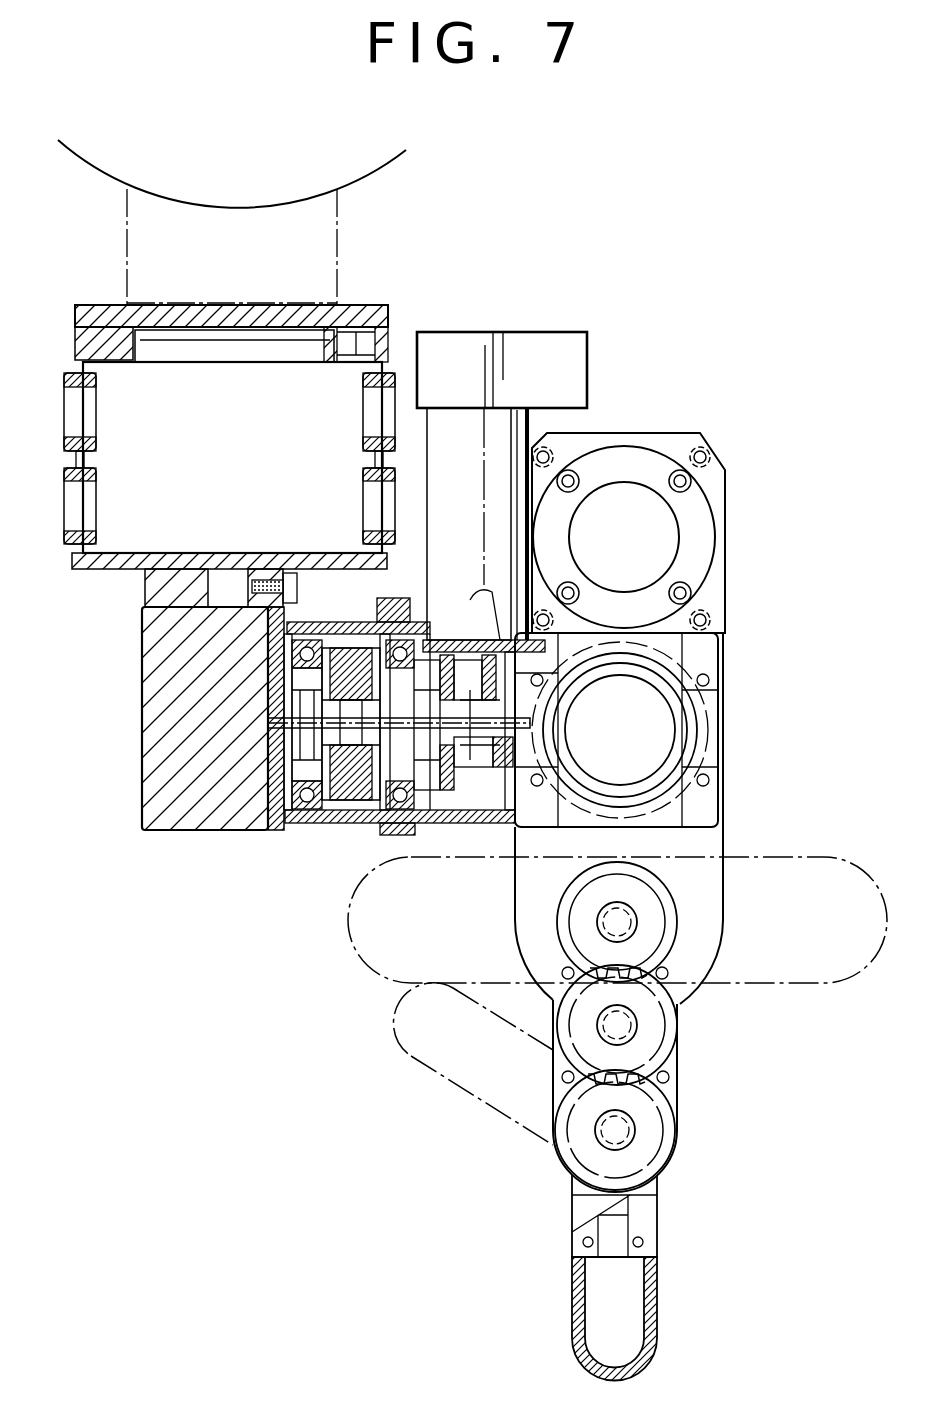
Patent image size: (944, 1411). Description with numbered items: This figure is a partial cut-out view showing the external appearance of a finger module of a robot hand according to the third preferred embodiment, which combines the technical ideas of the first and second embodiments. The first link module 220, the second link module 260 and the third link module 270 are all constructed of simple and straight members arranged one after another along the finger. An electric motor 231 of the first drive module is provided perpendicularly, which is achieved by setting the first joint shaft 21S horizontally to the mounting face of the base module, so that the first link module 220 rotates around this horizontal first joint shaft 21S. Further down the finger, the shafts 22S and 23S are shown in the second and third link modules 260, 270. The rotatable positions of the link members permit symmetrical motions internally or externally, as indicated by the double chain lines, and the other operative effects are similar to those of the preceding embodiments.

The electric motor 231 is at (518, 434).
The first link module 220 is at (705, 656).
The first joint shaft 21S is at (347, 812).
The gear shaft 22S is at (628, 918).
The gear shaft 23S is at (624, 1136).
The second link module 260 is at (668, 1098).
The third link module 270 is at (645, 1218).